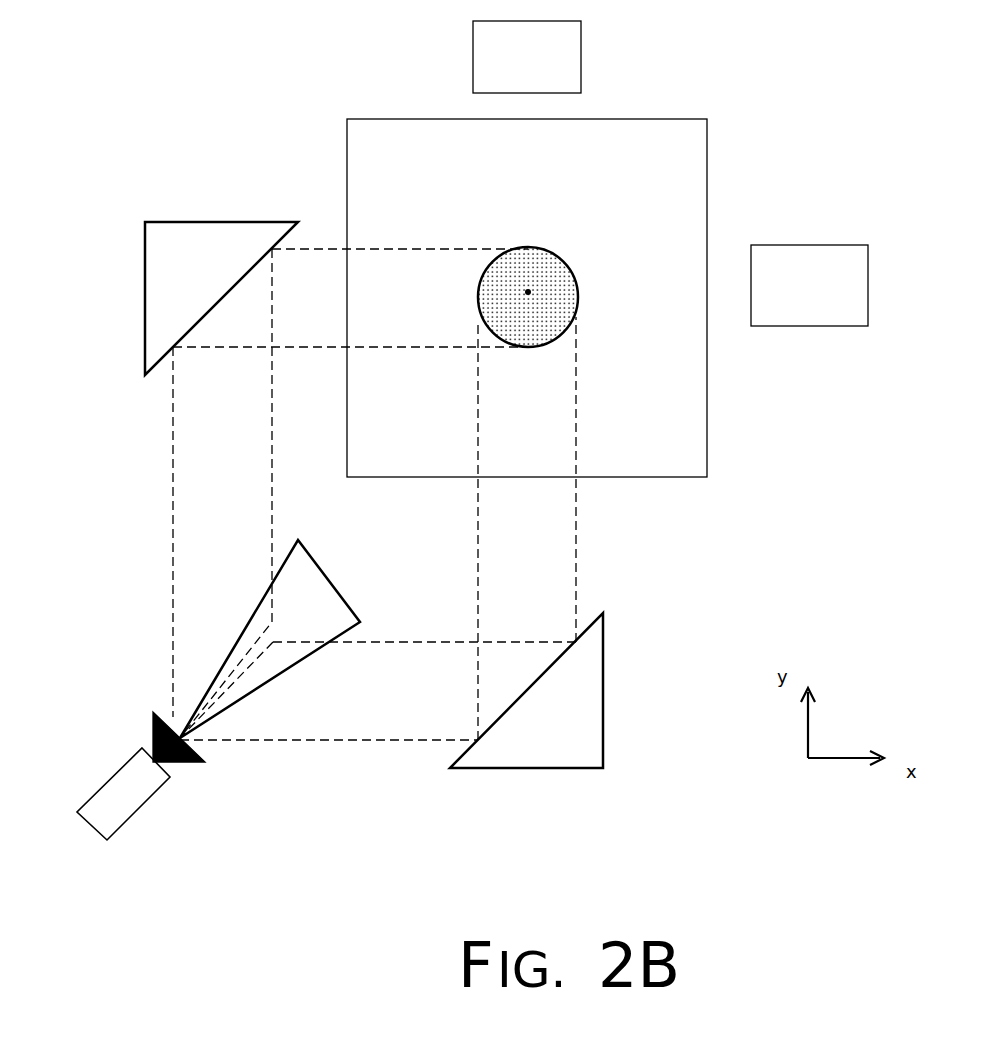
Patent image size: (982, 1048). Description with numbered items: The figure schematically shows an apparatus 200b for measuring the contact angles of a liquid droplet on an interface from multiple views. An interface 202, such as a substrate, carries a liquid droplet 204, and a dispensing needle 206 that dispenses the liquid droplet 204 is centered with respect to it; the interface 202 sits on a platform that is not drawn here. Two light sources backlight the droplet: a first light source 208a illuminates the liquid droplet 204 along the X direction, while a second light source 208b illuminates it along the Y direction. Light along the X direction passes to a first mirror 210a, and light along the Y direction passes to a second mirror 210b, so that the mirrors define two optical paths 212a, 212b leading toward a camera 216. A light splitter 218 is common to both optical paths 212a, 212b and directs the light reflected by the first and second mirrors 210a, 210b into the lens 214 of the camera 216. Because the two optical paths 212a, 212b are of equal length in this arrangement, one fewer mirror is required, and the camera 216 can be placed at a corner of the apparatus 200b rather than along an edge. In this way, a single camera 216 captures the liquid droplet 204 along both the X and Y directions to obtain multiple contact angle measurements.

The apparatus 200b is at (797, 46).
The interface 202 is at (635, 122).
The liquid droplet 204 is at (567, 262).
The dispensing needle 206 is at (528, 292).
The first light source 208a is at (809, 285).
The second light source 208b is at (527, 57).
The first mirror 210a is at (187, 222).
The second mirror 210b is at (603, 613).
The optical path 212a is at (172, 463).
The optical path 212b is at (577, 508).
The lens 214 is at (187, 763).
The camera 216 is at (87, 827).
The light splitter 218 is at (342, 587).